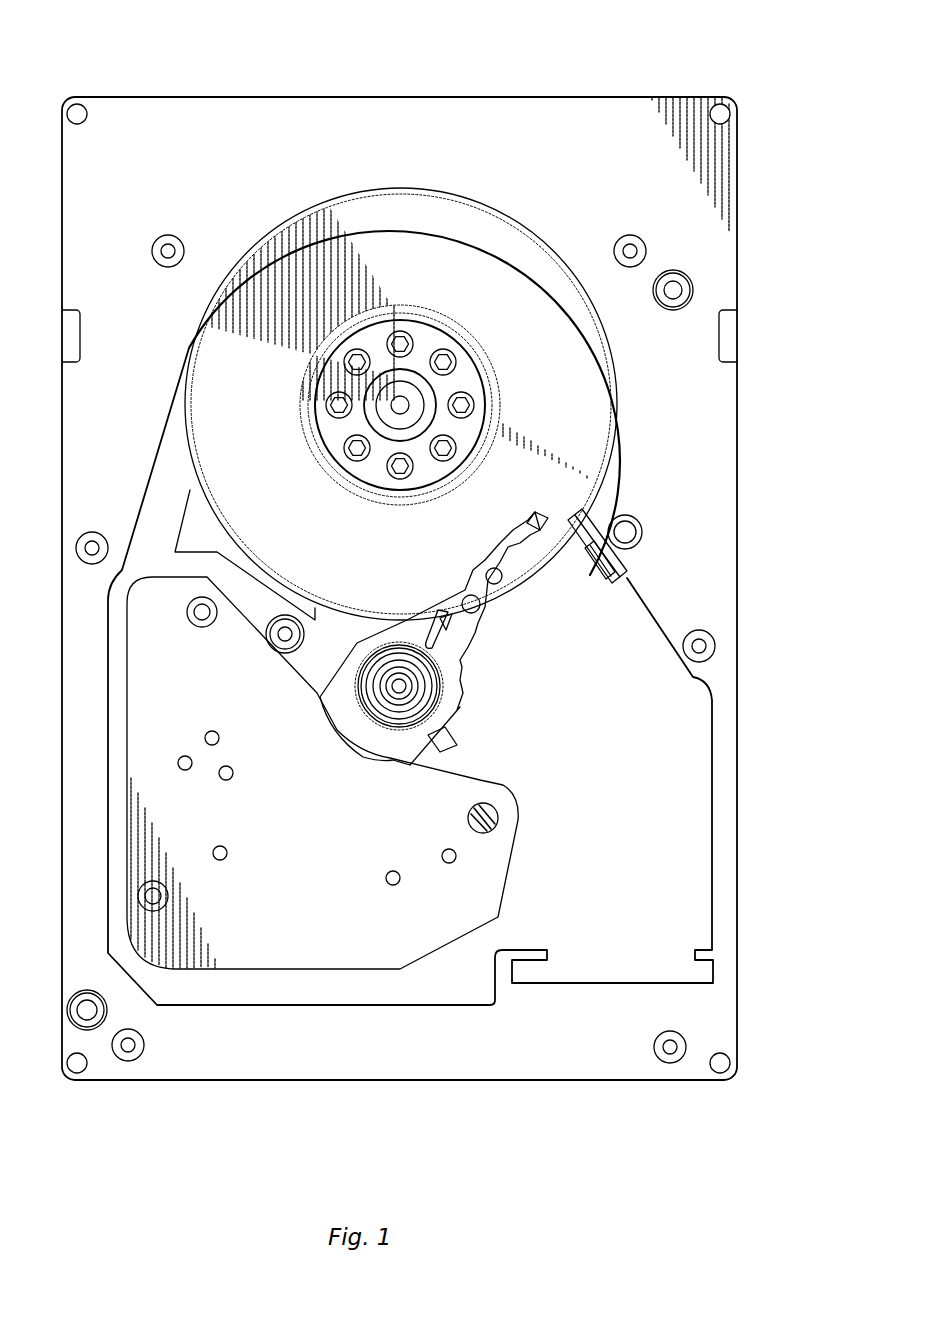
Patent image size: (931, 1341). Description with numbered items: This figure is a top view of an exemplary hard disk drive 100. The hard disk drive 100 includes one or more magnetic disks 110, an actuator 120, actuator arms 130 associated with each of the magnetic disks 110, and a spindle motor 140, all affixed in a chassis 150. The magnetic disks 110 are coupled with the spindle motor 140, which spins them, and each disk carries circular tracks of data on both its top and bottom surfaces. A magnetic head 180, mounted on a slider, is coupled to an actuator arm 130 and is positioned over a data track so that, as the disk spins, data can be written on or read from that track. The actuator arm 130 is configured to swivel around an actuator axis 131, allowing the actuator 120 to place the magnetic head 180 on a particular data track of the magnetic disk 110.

The hard disk drive 100 is at (645, 28).
The magnetic disk 110 is at (485, 237).
The actuator 120 is at (495, 872).
The actuator arm 130 is at (480, 580).
The actuator axis 131 is at (400, 688).
The spindle motor 140 is at (405, 405).
The chassis 150 is at (175, 97).
The magnetic head 180 is at (540, 517).